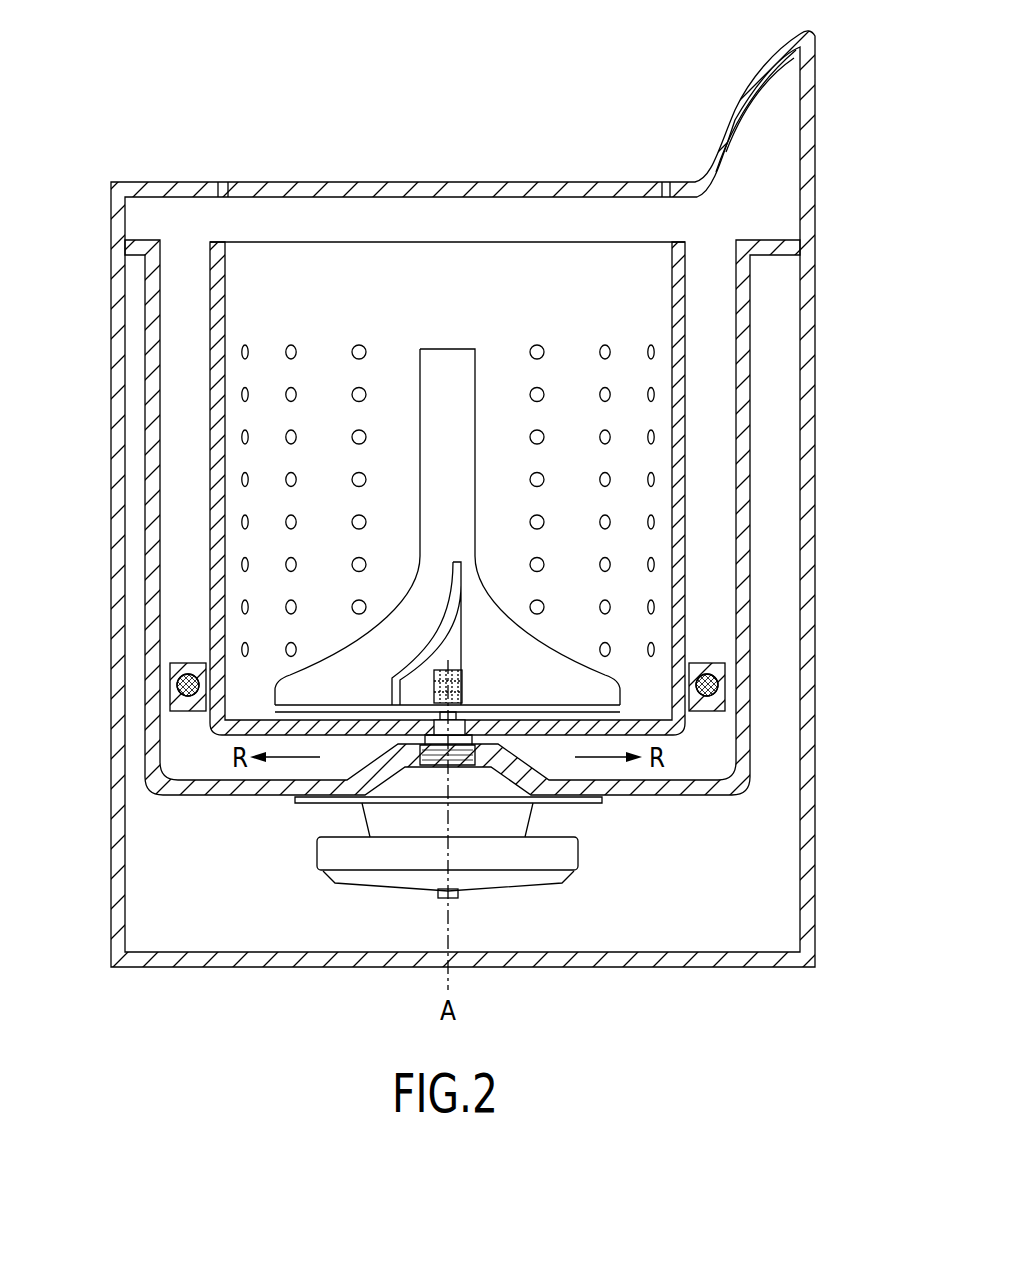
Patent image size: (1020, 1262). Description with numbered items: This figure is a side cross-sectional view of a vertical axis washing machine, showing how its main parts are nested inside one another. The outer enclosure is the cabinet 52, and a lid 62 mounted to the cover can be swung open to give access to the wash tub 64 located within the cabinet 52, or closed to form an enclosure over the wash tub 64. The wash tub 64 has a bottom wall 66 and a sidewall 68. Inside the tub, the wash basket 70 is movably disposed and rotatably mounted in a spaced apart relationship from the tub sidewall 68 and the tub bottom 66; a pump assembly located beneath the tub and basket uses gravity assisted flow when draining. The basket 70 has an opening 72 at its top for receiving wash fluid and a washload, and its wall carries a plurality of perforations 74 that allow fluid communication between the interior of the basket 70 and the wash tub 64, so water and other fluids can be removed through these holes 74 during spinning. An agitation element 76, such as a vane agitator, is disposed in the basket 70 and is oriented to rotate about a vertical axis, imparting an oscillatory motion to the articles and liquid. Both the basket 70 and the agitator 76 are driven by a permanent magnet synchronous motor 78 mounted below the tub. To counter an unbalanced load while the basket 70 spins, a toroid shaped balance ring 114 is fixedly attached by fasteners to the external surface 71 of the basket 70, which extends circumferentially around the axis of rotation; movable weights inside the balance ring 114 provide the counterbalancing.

The cabinet 52 is at (813, 320).
The lid 62 is at (378, 184).
The wash tub 64 is at (742, 644).
The bottom wall 66 is at (675, 805).
The sidewall 68 is at (758, 446).
The basket 70 is at (212, 275).
The external surface 71 is at (690, 621).
The opening 72 is at (531, 240).
The perforations 74 is at (370, 342).
The agitation element 76 is at (450, 362).
The permanent magnet synchronous motor 78 is at (560, 860).
The balance ring 114 is at (183, 638).